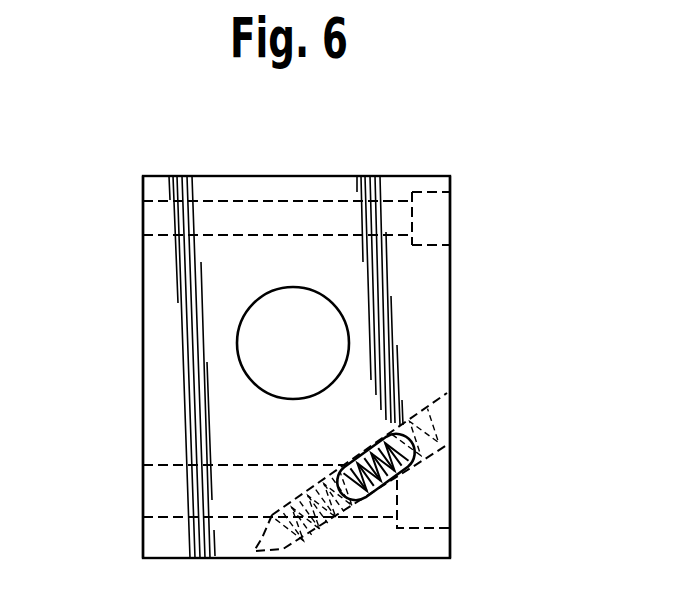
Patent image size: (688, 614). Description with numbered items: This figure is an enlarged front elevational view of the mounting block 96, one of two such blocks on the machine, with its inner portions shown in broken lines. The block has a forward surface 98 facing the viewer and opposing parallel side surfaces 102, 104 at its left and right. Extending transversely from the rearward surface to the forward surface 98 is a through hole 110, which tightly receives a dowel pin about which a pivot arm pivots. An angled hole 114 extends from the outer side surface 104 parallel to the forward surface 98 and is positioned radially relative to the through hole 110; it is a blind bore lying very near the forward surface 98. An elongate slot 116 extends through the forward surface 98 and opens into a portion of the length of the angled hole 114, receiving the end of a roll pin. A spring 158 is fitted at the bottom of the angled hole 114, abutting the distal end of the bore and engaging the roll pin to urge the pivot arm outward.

The mounting block 96 is at (522, 296).
The forward surface 98 is at (160, 413).
The side surface 102 is at (143, 295).
The outer side surface 104 is at (450, 280).
The through hole 110 is at (311, 297).
The angled hole 114 is at (455, 390).
The spring 158 is at (405, 482).
The elongate slot 116 is at (377, 489).